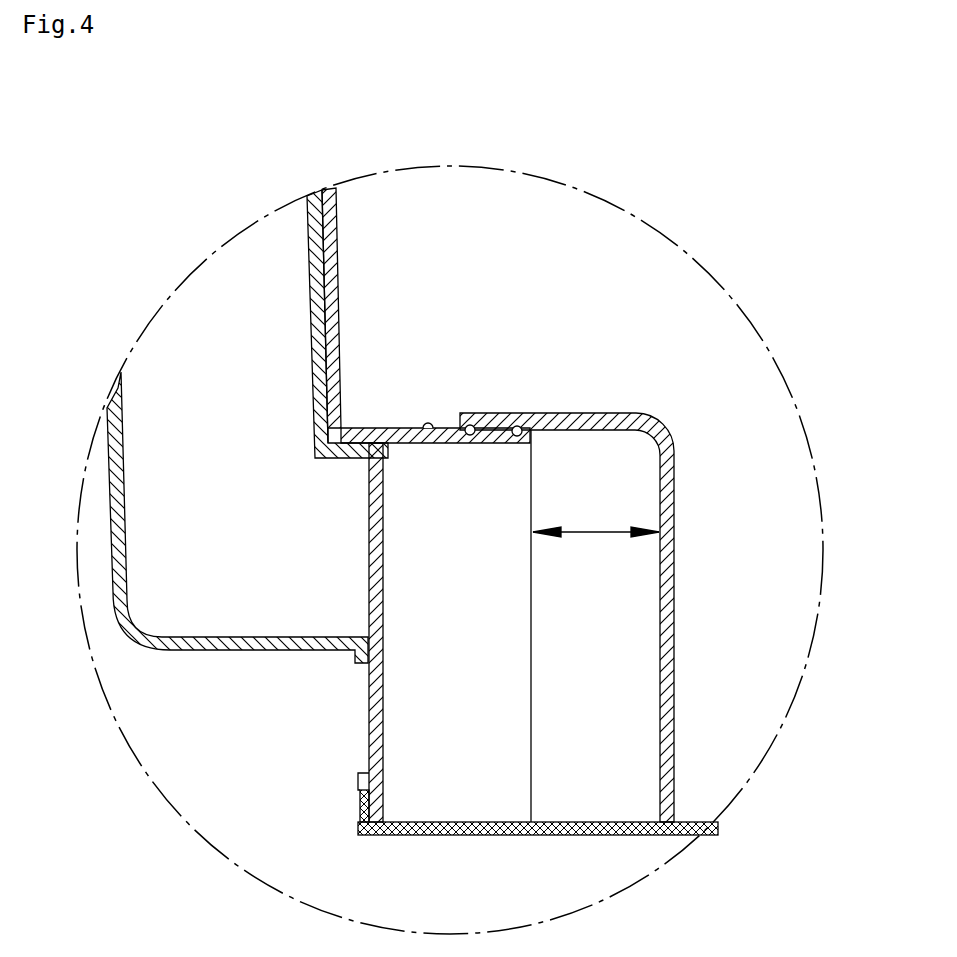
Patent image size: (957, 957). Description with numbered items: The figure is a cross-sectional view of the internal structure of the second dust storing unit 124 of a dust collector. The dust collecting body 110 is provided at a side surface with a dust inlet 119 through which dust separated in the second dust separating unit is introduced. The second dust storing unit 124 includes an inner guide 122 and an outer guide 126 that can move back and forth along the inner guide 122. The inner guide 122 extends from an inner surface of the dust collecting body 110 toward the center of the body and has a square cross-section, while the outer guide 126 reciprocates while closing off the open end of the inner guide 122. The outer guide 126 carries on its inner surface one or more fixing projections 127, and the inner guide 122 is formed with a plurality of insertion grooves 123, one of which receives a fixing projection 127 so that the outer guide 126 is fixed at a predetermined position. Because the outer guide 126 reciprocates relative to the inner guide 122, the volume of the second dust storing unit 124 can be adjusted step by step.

The dust collecting body 110 is at (338, 284).
The dust inlet 119 is at (368, 556).
The inner guide 122 is at (389, 426).
The insertion grooves 123 is at (429, 423).
The second dust storing unit 124 is at (437, 720).
The outer guide 126 is at (645, 413).
The fixing projections 127 is at (471, 412).